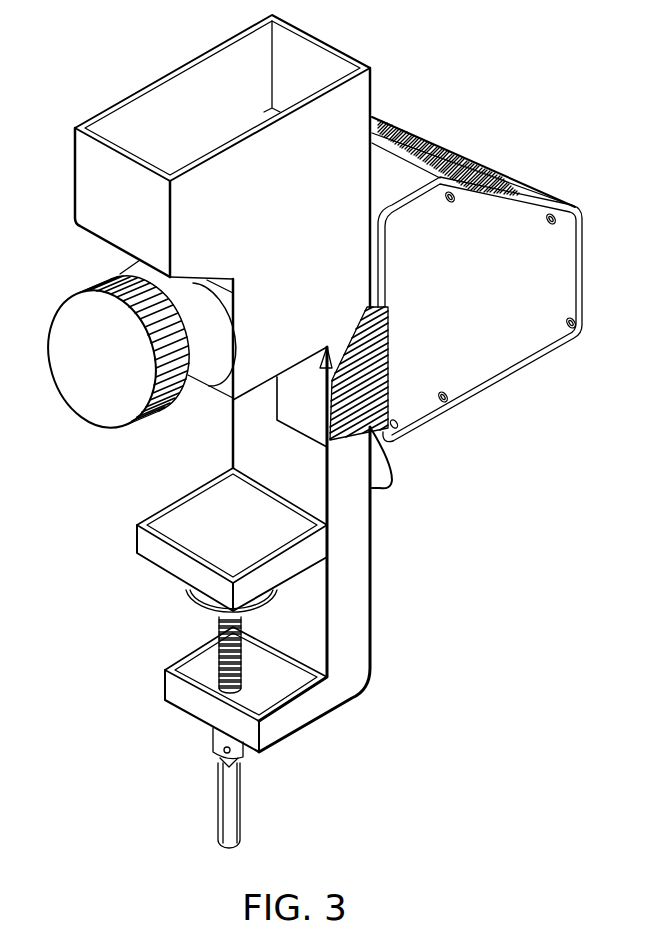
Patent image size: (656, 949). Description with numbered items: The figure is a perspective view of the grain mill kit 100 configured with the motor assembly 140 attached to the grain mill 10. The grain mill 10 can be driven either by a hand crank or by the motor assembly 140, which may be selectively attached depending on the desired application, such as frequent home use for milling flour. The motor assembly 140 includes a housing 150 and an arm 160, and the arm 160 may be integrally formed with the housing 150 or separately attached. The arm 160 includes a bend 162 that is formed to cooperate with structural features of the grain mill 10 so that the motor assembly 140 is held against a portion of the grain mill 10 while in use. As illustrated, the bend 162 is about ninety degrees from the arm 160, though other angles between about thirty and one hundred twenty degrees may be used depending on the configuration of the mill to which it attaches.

The grain mill kit 100 is at (122, 43).
The grain mill 10 is at (182, 498).
The motor assembly 140 is at (512, 435).
The housing 150 is at (518, 177).
The arm 160 is at (340, 433).
The bend 162 is at (303, 425).